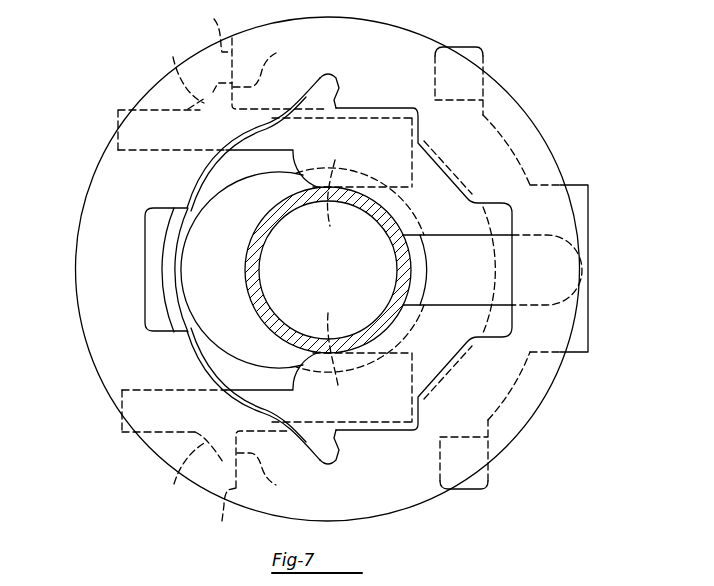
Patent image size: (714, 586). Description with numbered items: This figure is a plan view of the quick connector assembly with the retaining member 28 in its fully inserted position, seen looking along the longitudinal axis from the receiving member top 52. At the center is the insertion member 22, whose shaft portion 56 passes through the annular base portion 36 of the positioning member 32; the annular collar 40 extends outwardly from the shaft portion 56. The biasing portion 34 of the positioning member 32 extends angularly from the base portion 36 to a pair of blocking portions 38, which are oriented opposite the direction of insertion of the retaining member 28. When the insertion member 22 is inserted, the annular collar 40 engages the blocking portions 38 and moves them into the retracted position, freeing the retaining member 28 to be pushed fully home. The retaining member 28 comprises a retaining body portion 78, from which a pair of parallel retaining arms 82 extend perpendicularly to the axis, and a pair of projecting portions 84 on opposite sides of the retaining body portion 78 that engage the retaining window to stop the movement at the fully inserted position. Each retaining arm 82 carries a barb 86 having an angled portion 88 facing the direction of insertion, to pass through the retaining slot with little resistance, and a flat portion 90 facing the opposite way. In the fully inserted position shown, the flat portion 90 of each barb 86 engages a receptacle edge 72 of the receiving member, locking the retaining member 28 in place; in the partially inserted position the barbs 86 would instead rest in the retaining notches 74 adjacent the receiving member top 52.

The insertion member 22 is at (386, 237).
The retaining member 28 is at (591, 331).
The positioning member 32 is at (161, 275).
The biasing portion 34 is at (333, 272).
The base portion 36 is at (467, 274).
The blocking portions 38 is at (414, 177).
The annular collar 40 is at (230, 272).
The receiving member top 52 is at (413, 488).
The shaft portion 56 is at (230, 257).
The receptacle edge 72 is at (213, 18).
The retaining notch 74 is at (325, 73).
The retaining body portion 78 is at (586, 204).
The retaining arms 82 is at (118, 112).
The projecting portions 84 is at (483, 53).
The barb 86 is at (223, 461).
The angled portion 88 is at (173, 57).
The flat portion 90 is at (278, 53).